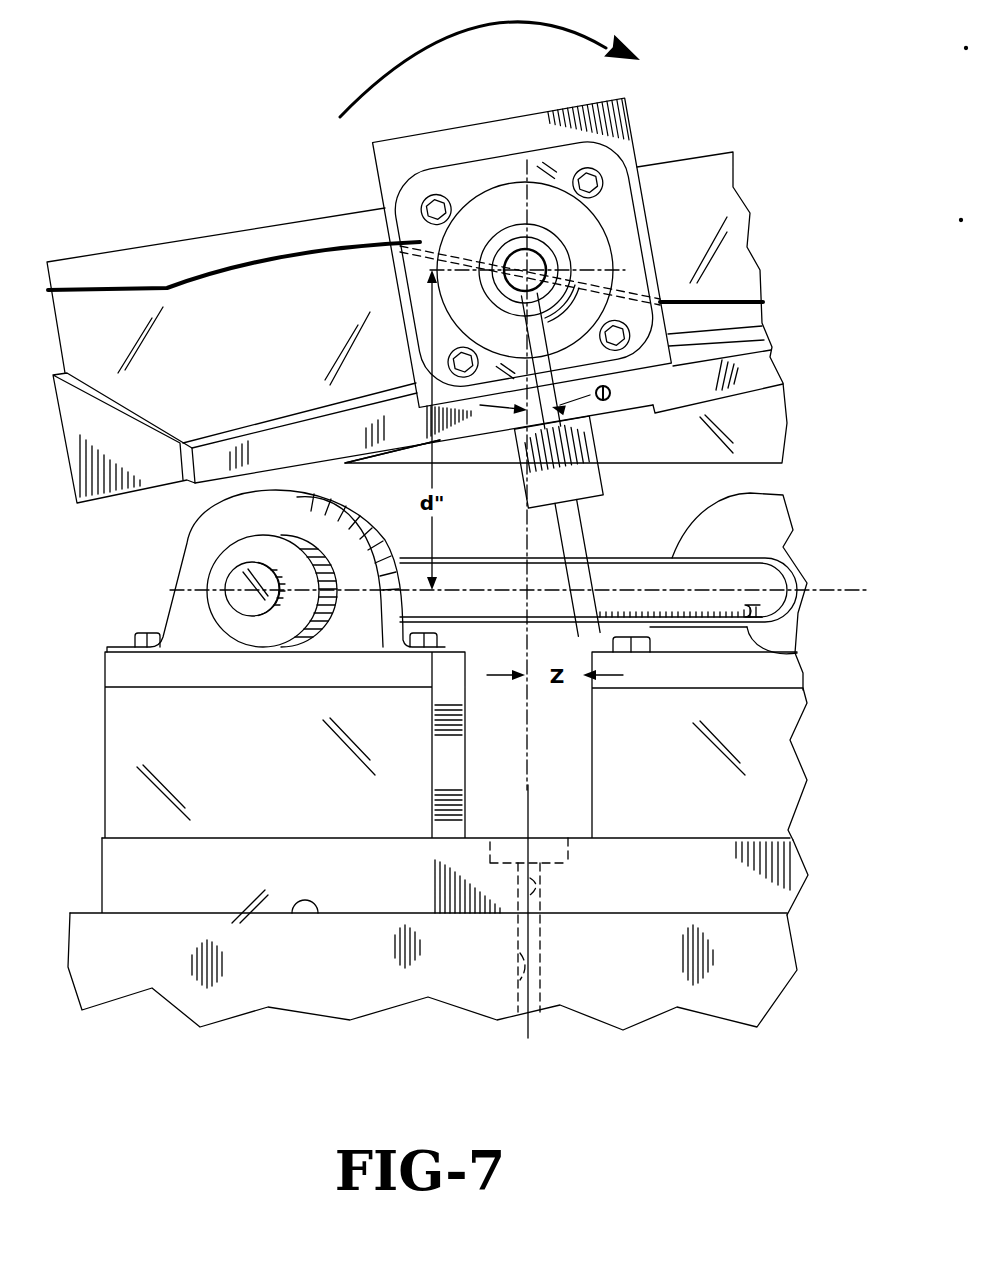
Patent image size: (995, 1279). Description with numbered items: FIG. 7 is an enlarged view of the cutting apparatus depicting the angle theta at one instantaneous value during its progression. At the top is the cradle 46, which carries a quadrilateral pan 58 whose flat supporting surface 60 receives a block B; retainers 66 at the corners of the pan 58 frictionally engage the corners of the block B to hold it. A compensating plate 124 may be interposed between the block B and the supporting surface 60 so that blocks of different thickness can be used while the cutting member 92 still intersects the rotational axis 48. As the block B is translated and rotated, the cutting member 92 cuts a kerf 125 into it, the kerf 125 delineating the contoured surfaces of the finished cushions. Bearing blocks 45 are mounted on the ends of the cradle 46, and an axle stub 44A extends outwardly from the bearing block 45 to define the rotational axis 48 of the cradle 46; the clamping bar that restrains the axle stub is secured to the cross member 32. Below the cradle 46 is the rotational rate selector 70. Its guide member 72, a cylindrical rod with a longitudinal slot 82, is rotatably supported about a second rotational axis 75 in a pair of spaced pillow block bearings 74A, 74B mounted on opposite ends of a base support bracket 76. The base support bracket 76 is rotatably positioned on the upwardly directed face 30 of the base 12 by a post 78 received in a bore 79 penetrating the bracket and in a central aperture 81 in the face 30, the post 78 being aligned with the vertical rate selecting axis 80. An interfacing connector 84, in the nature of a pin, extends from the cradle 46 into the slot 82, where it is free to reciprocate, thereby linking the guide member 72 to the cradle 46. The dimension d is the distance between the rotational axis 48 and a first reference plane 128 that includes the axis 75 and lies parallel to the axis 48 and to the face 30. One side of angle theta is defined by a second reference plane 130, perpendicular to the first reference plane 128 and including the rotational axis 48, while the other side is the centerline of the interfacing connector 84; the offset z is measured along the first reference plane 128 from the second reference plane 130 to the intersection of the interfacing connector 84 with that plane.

The block B is at (715, 170).
The cutting member 92 is at (105, 290).
The kerf 125 is at (738, 297).
The compensating plate 124 is at (755, 340).
The cross member 32 is at (760, 420).
The retainers 66 is at (58, 450).
The supporting surface 60 is at (275, 424).
The pan 58 is at (208, 485).
The cradle 46 is at (640, 117).
The bearing blocks 45 is at (467, 235).
The axle stub 44A is at (530, 255).
The rotational axis 48 is at (545, 255).
The interfacing connector 84 is at (580, 528).
The pillow block bearing 74A is at (188, 611).
The second rotational axis 75 is at (232, 598).
The first reference plane 128 is at (352, 597).
The guide member 72 is at (770, 578).
The pillow block bearing 74B is at (757, 537).
The slot 82 is at (765, 650).
The rotational rate selector 70 is at (806, 742).
The second reference plane 130 is at (523, 645).
The rate selecting axis 80 is at (540, 797).
The base support bracket 76 is at (780, 887).
The bore 79 is at (545, 887).
The post 78 is at (540, 955).
The central aperture 81 is at (523, 970).
The upwardly directed face 30 is at (292, 915).
The base 12 is at (780, 974).